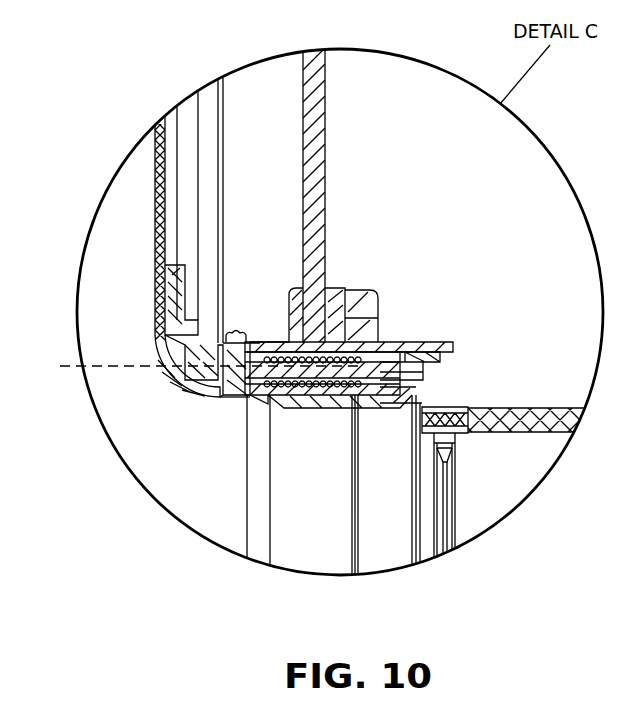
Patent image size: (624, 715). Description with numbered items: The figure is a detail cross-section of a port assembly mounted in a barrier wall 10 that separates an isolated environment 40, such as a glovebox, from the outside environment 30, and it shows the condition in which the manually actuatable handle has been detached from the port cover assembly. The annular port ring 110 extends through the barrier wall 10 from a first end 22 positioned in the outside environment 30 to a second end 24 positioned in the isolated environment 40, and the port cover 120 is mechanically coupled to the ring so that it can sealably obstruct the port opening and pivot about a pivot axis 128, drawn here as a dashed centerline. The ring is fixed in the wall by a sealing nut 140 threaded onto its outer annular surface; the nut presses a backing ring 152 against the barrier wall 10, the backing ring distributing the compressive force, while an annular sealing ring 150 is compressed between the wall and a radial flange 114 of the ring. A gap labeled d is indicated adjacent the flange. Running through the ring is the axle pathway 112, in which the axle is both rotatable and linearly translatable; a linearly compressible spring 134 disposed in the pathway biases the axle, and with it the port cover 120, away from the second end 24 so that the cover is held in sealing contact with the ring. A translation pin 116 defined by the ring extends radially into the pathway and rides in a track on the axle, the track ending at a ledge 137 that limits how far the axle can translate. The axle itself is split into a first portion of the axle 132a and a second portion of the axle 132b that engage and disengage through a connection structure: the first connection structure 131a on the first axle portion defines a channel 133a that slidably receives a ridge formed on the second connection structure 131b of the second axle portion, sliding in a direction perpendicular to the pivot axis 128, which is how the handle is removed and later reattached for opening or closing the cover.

The barrier wall 10 is at (312, 90).
The first end 22 is at (455, 527).
The second end 24 is at (264, 552).
The outside environment 30 is at (388, 124).
The isolated environment 40 is at (264, 124).
The annular port ring 110 is at (250, 428).
The axle pathway 112 is at (275, 402).
The radial flange 114 is at (277, 331).
The translation pin 116 is at (430, 350).
The port cover 120 is at (152, 330).
The pivot axis 128 is at (106, 366).
The first connection structure 131a is at (394, 422).
The second connection structure 131b is at (440, 366).
The first portion of the axle 132a is at (470, 410).
The second portion of the axle 132b is at (233, 368).
The channel 133a is at (412, 383).
The spring 134 is at (330, 398).
The ledge 137 is at (398, 346).
The sealing nut 140 is at (352, 290).
The annular sealing ring 150 is at (297, 288).
The backing ring 152 is at (332, 288).
The gap d is at (236, 328).